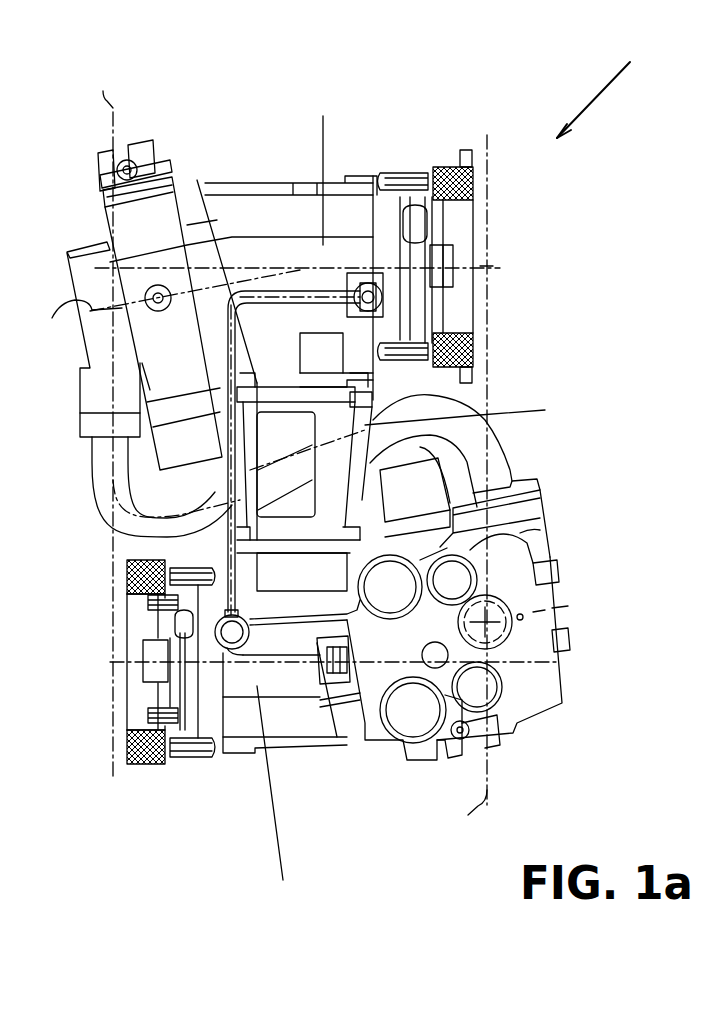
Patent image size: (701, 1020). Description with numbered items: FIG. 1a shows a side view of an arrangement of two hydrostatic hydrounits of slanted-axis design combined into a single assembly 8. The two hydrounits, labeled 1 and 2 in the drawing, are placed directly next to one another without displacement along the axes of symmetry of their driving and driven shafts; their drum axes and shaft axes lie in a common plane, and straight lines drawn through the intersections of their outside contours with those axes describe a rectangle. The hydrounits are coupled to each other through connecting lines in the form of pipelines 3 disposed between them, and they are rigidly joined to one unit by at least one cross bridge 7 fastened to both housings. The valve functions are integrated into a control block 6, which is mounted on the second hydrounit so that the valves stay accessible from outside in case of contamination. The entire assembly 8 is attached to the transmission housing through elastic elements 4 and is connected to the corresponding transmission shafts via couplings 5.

The upper housing / first cylinder 1 is at (285, 246).
The lower housing / second cylinder 2 is at (293, 686).
The pipelines 3 is at (497, 460).
The elastic elements 4 is at (443, 167).
The couplings 5 is at (443, 258).
The control block 6 is at (540, 688).
The cross bridge 7 is at (483, 413).
The assembly 8 is at (604, 93).